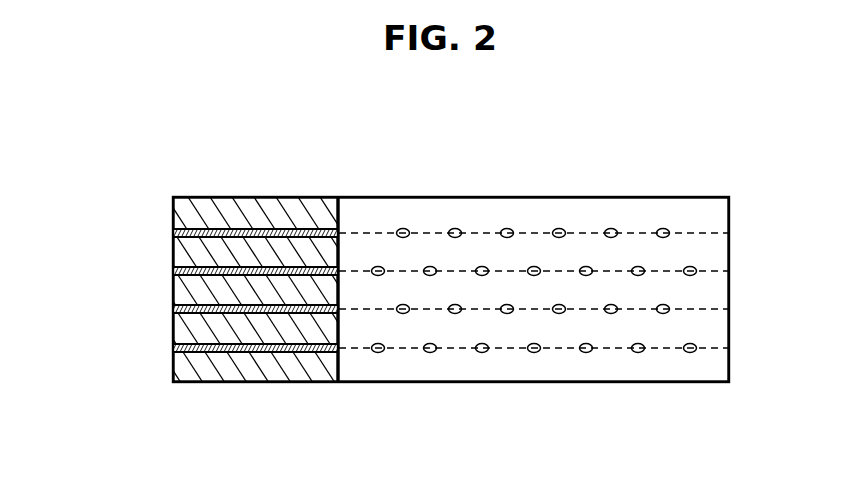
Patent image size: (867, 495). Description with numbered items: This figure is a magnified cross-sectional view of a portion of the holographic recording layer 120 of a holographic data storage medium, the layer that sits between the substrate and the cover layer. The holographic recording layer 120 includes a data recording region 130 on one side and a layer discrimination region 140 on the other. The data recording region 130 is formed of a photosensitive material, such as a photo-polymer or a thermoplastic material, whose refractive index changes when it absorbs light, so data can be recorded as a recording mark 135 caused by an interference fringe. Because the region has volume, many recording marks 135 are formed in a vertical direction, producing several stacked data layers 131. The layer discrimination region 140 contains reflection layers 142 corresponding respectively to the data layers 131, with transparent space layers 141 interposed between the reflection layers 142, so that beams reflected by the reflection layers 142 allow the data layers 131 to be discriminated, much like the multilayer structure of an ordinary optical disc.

The holographic recording layer 120 is at (717, 190).
The data recording region 130 is at (728, 415).
The data layers 131 is at (362, 232).
The recording mark 135 is at (404, 228).
The layer discrimination region 140 is at (333, 417).
The transparent space layers 141 is at (173, 348).
The reflection layers 142 is at (173, 233).